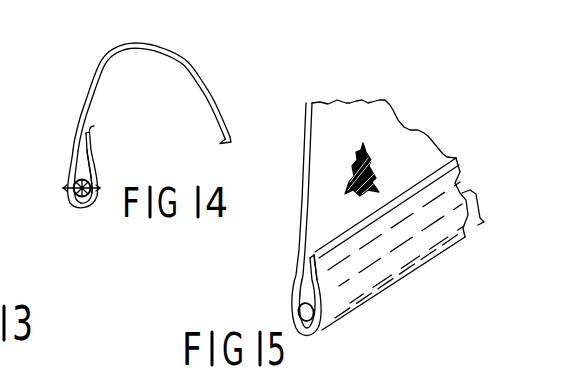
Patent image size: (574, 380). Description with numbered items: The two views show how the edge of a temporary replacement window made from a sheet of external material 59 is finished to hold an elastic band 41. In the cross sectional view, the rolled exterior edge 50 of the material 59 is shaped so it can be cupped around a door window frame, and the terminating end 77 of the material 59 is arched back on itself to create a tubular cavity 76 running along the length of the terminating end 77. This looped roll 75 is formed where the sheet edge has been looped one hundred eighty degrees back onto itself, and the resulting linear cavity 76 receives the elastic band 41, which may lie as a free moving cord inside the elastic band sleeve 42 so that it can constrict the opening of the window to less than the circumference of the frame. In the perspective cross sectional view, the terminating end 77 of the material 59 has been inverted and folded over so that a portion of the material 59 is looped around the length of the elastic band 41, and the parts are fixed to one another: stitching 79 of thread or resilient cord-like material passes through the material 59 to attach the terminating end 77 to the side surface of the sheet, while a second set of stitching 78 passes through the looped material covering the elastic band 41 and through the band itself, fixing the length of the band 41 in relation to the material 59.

In FIG. 14, the elastic band 41 is at (72, 208).
In FIG. 15, the elastic band 41 is at (309, 322).
In FIG. 14, the elastic band sleeve 42 is at (64, 167).
In FIG. 14, the rolled exterior edge 50 is at (157, 45).
In FIG. 14, the external sheet 59 is at (196, 74).
In FIG. 15, the external sheet 59 is at (318, 151).
In FIG. 14, the looped roll 75 is at (88, 210).
In FIG. 14, the tubular cavity 76 is at (90, 179).
In FIG. 14, the terminating end 77 is at (94, 126).
In FIG. 15, the terminating end 77 is at (325, 232).
In FIG. 15, the second set of stitching 78 is at (392, 296).
In FIG. 15, the stitching 79 is at (317, 268).